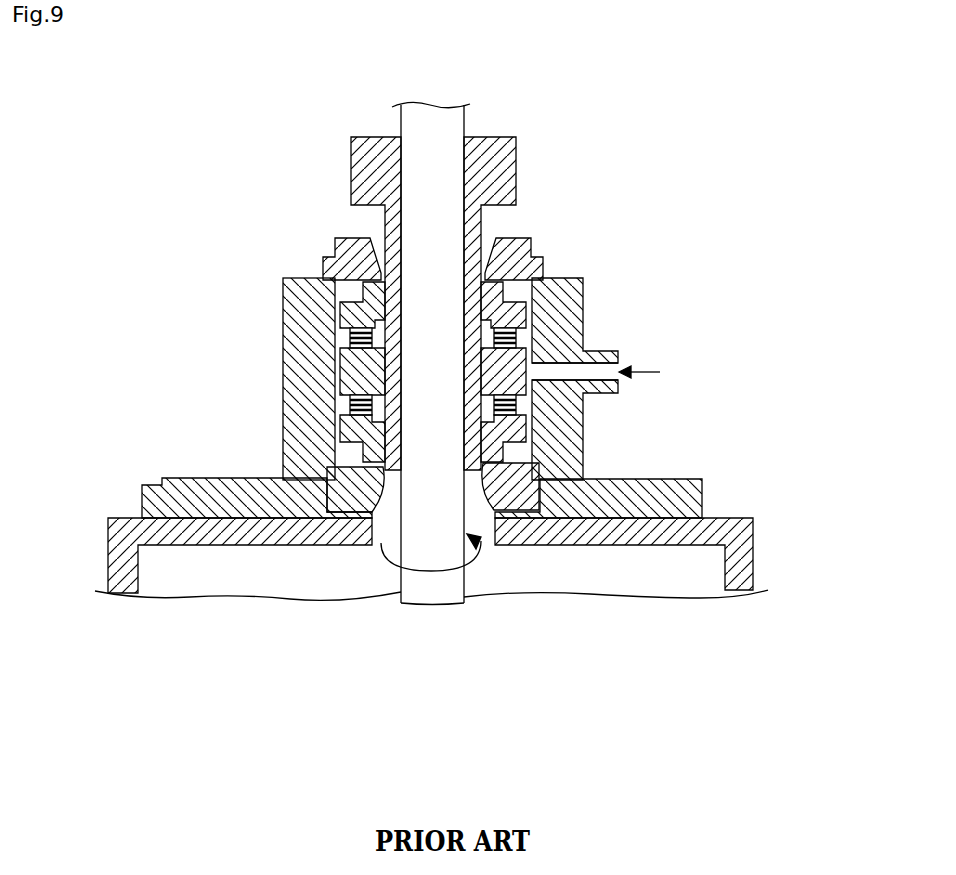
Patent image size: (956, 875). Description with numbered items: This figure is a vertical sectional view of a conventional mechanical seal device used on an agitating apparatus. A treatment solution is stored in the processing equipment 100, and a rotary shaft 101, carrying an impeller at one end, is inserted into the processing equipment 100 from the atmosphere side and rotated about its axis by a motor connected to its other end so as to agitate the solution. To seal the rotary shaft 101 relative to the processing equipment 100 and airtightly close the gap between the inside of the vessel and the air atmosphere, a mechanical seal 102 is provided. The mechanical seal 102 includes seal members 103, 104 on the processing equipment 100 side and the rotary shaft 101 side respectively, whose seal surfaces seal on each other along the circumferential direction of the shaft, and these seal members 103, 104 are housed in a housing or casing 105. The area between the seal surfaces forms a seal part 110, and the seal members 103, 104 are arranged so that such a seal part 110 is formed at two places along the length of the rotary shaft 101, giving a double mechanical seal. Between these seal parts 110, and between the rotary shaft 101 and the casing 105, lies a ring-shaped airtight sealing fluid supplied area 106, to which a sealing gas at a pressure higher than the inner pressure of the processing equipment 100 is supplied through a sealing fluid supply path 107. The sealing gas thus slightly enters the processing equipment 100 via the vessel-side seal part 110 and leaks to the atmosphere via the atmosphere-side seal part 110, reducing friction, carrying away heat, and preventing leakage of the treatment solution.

The processing equipment 100 is at (732, 518).
The rotary shaft 101 is at (466, 123).
The mechanical seal 102 is at (168, 289).
The seal member 103 is at (543, 265).
The seal member 104 is at (533, 355).
The housing (casing) 105 is at (283, 369).
The sealing fluid supplied area 106 is at (348, 452).
The sealing fluid supply path 107 is at (620, 388).
The seal part 110 is at (333, 290).